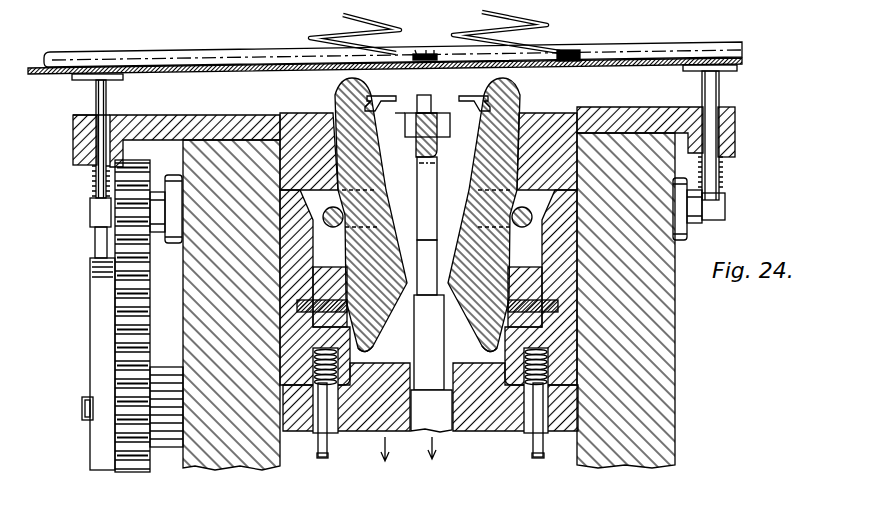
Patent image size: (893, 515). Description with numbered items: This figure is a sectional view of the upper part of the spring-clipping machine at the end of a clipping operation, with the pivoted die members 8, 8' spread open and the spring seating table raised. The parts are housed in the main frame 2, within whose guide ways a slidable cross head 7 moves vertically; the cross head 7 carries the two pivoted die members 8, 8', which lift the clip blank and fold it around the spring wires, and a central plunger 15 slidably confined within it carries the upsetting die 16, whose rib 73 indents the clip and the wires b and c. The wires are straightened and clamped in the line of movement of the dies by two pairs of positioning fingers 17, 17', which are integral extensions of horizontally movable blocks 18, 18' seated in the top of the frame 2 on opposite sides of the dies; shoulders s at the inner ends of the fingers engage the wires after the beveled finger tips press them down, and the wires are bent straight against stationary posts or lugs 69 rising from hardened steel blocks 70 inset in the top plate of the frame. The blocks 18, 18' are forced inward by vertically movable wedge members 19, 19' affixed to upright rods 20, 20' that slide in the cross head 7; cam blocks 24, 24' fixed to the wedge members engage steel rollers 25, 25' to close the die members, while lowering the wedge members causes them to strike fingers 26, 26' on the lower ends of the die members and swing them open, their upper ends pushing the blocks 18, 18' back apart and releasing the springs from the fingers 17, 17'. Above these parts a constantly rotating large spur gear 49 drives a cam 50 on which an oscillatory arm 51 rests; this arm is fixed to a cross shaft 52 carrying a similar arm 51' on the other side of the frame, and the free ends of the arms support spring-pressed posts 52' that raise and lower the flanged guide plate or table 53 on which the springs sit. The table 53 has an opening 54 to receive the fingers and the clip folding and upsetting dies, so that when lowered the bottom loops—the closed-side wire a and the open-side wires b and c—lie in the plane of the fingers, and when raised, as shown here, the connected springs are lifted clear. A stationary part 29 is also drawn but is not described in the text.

The main frame 2 is at (679, 417).
The cross head 7 is at (475, 432).
The pivoted die member 8 is at (371, 215).
The pivoted die member 8' is at (484, 215).
The central plunger 15 is at (431, 411).
The upsetting die 16 is at (438, 150).
The positioning finger 17 is at (384, 92).
The positioning finger 17' is at (471, 92).
The horizontally movable block 18 is at (309, 140).
The horizontally movable block 18' is at (547, 139).
The wedge member 19 is at (328, 287).
The wedge member 19' is at (527, 287).
The upright rod 20 is at (323, 415).
The upright rod 20' is at (542, 415).
The cam block 24 is at (322, 286).
The cam block 24' is at (533, 286).
The steel roller 25 is at (331, 228).
The steel roller 25' is at (525, 228).
The finger 26 is at (379, 352).
The finger 26' is at (479, 351).
The top plate 29 is at (233, 115).
The large spur gear 49 is at (148, 310).
The cam 50 is at (90, 270).
The oscillatory arm 51 is at (81, 228).
The oscillatory arm 51' is at (716, 209).
The cross shaft 52 is at (716, 132).
The spring-pressed post 52' is at (91, 136).
The guide plate or table 53 is at (172, 76).
The opening 54 is at (323, 67).
The stationary post or lug 69 is at (425, 96).
The steel block 70 is at (405, 123).
The rib 73 is at (434, 113).
The wire a is at (416, 55).
The wire b is at (426, 55).
The wire c is at (434, 55).
The shoulder s is at (374, 110).